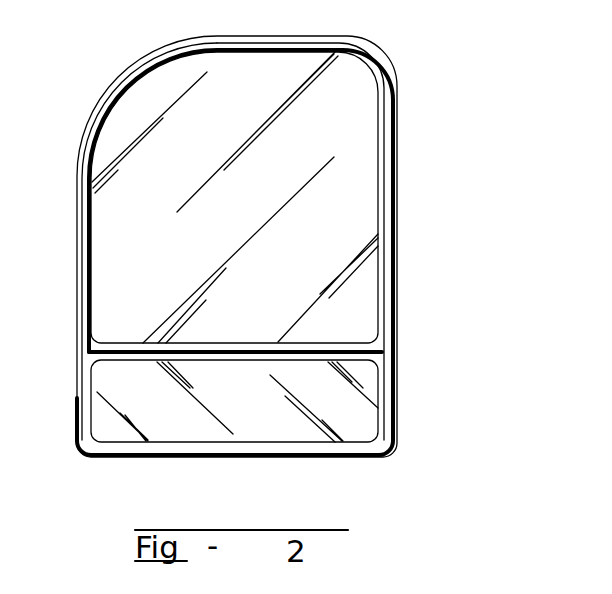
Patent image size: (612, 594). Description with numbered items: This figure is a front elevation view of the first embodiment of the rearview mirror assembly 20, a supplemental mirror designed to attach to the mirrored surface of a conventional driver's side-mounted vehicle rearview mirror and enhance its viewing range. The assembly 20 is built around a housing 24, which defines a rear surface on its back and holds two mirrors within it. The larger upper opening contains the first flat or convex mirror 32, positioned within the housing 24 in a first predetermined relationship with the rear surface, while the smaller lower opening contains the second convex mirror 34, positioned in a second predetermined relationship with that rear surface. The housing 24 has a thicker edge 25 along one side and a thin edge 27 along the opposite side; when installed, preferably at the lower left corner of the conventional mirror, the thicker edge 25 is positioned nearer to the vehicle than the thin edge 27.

The rearview mirror assembly 20 is at (486, 135).
The housing 24 is at (396, 104).
The thicker edge 25 is at (397, 248).
The thin edge 27 is at (78, 191).
The first flat or convex mirror 32 is at (111, 241).
The second convex mirror 34 is at (266, 421).